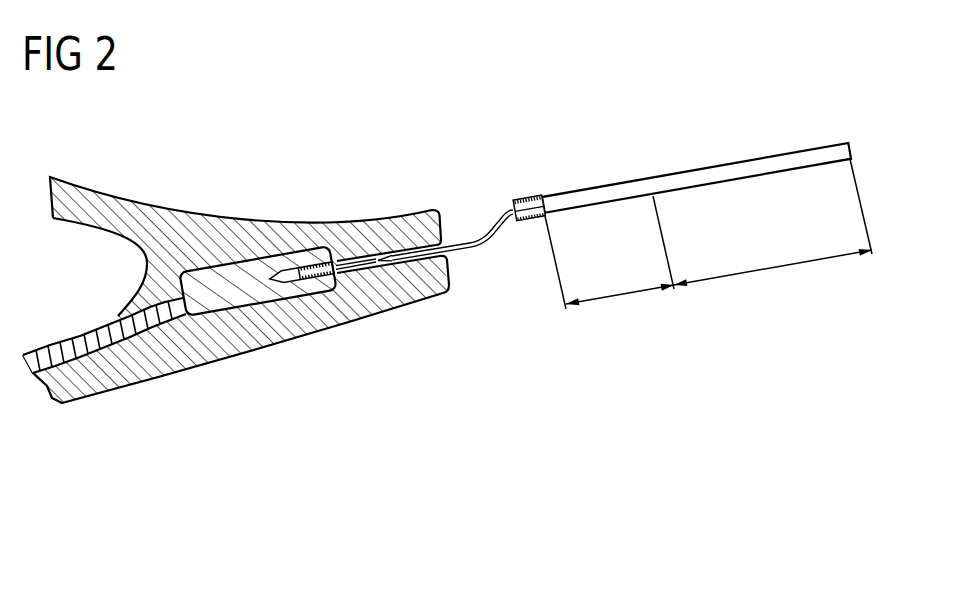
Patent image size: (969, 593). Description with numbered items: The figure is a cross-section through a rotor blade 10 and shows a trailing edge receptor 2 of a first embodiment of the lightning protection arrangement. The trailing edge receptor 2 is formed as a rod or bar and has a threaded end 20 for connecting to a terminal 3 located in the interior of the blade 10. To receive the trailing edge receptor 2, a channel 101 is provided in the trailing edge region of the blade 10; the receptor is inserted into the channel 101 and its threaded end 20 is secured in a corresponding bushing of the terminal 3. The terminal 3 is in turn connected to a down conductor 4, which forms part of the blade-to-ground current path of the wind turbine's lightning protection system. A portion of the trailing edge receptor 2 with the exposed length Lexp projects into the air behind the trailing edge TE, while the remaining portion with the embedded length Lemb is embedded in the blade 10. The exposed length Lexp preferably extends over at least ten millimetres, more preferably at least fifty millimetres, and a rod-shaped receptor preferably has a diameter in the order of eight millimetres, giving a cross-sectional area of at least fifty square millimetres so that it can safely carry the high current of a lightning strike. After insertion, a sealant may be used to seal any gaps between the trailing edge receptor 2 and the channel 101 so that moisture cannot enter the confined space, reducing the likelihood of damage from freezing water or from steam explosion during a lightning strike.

The trailing edge receptor 2 is at (778, 162).
The terminal 3 is at (247, 295).
The down conductor 4 is at (77, 360).
The rotor blade 10 is at (132, 208).
The threaded end 20 is at (513, 199).
The channel 101 is at (375, 280).
The trailing edge TE is at (450, 268).
The embedded length Lemb is at (622, 298).
The exposed length Lexp is at (783, 270).